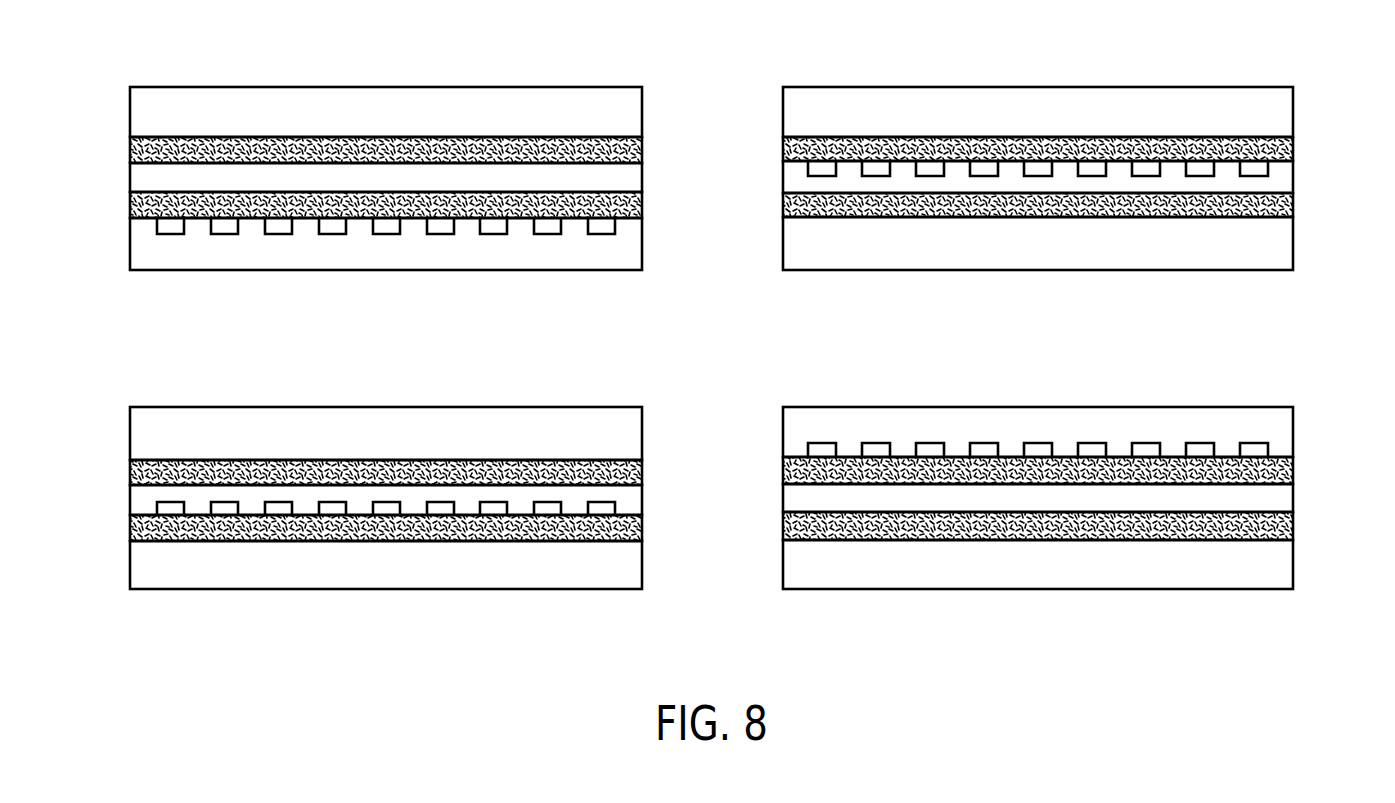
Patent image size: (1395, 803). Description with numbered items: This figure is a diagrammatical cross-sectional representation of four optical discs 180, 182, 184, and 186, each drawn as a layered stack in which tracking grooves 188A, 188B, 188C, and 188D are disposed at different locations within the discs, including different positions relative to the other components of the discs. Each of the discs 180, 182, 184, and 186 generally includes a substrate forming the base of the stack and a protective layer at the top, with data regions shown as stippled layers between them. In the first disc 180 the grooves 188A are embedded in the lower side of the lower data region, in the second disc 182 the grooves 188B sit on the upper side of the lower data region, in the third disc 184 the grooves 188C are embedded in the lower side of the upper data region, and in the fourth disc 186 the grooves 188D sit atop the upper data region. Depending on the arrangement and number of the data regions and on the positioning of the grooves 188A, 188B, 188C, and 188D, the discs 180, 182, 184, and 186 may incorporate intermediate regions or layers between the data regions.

The optical disc 180 is at (394, 58).
The optical disc 182 is at (396, 366).
The optical disc 184 is at (1027, 60).
The optical disc 186 is at (1027, 366).
The tracking grooves 188A is at (130, 262).
The tracking grooves 188B is at (642, 497).
The tracking grooves 188C is at (1293, 175).
The tracking grooves 188D is at (783, 437).